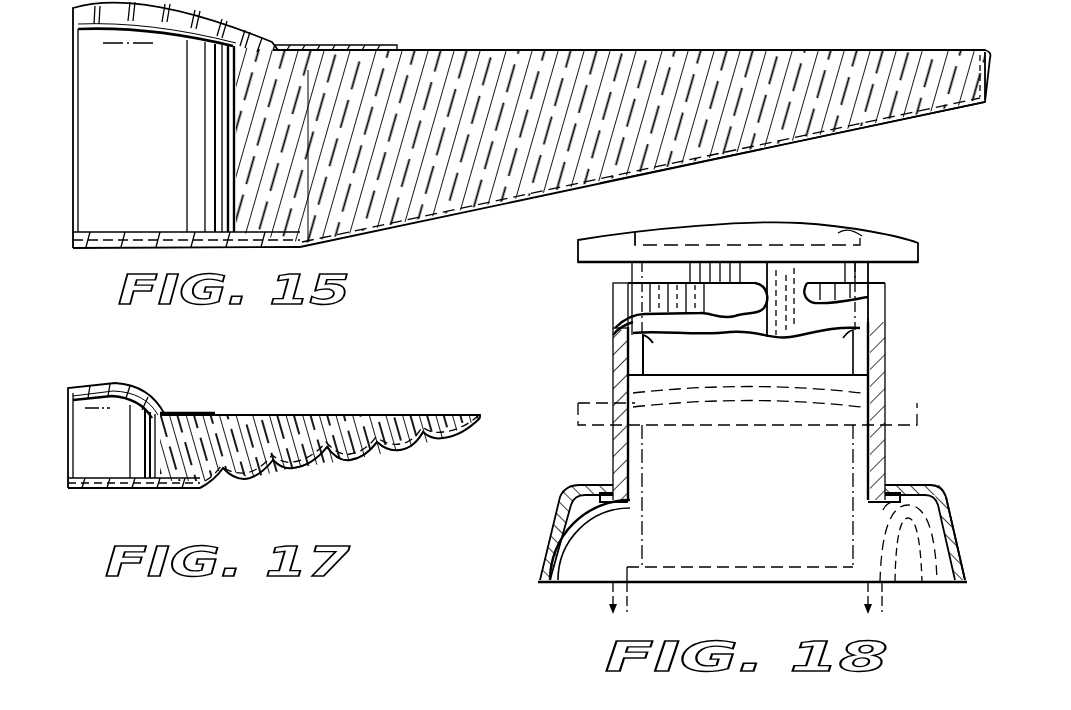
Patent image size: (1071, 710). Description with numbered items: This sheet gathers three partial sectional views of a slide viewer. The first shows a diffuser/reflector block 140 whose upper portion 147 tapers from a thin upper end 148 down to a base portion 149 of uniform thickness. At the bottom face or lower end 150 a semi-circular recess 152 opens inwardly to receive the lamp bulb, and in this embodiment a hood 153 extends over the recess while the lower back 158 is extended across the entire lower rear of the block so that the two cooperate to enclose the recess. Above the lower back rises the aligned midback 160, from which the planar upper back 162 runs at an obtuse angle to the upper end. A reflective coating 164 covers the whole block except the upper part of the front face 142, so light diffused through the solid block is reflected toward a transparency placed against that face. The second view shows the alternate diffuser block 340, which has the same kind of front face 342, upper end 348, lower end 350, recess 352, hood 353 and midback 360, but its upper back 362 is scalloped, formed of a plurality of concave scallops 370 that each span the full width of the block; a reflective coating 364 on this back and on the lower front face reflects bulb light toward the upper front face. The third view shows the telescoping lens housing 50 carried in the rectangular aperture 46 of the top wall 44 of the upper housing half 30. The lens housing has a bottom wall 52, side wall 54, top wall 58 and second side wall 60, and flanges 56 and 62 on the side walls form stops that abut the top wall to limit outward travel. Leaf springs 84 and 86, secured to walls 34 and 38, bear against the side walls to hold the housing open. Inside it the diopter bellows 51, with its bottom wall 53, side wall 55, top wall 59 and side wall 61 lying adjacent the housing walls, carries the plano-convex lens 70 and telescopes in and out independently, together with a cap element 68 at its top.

In FIG. 15, the diffuser/reflector block 140 is at (615, 42).
In FIG. 15, the front face 142 is at (455, 50).
In FIG. 15, the upper portion 147 is at (722, 62).
In FIG. 15, the upper end 148 is at (988, 56).
In FIG. 15, the base portion 149 is at (322, 45).
In FIG. 15, the lower end 150 is at (72, 50).
In FIG. 15, the semi-circular recess 152 is at (152, 134).
In FIG. 15, the hood 153 is at (245, 36).
In FIG. 15, the lower back 158 is at (103, 232).
In FIG. 15, the midback 160 is at (280, 252).
In FIG. 15, the upper back 162 is at (650, 170).
In FIG. 15, the reflective coating 164 is at (798, 142).
In FIG. 17, the diffuser block 340 is at (243, 395).
In FIG. 17, the front face 342 is at (390, 413).
In FIG. 17, the upper end 348 is at (490, 412).
In FIG. 17, the lower end 350 is at (66, 410).
In FIG. 17, the recess 352 is at (122, 449).
In FIG. 17, the hood 353 is at (130, 390).
In FIG. 17, the midback 360 is at (185, 489).
In FIG. 17, the scalloped upper back 362 is at (396, 452).
In FIG. 17, the reflective coating 364 is at (338, 460).
In FIG. 17, the concave scallops 370 is at (286, 462).
In FIG. 18, the upper housing half 30 is at (968, 540).
In FIG. 18, the wall 34 is at (552, 528).
In FIG. 18, the wall 38 is at (952, 530).
In FIG. 18, the top wall 44 is at (900, 485).
In FIG. 18, the rectangular aperture 46 is at (875, 493).
In FIG. 18, the lens housing 50 is at (916, 322).
In FIG. 18, the diopter bellows 51 is at (585, 233).
In FIG. 18, the bottom wall 52 is at (655, 447).
In FIG. 18, the bottom wall 53 is at (616, 335).
In FIG. 18, the side wall 54 is at (620, 376).
In FIG. 18, the side wall 55 is at (640, 344).
In FIG. 18, the flange 56 is at (607, 493).
In FIG. 18, the top wall 58 is at (618, 308).
In FIG. 18, the top wall 59 is at (838, 272).
In FIG. 18, the second side wall 60 is at (884, 372).
In FIG. 18, the side wall 61 is at (858, 345).
In FIG. 18, the flange 62 is at (880, 510).
In FIG. 18, the cap notch 68 is at (845, 228).
In FIG. 18, the plano-convex lens 70 is at (676, 230).
In FIG. 18, the leaf spring 84 is at (604, 516).
In FIG. 18, the leaf spring 86 is at (905, 520).